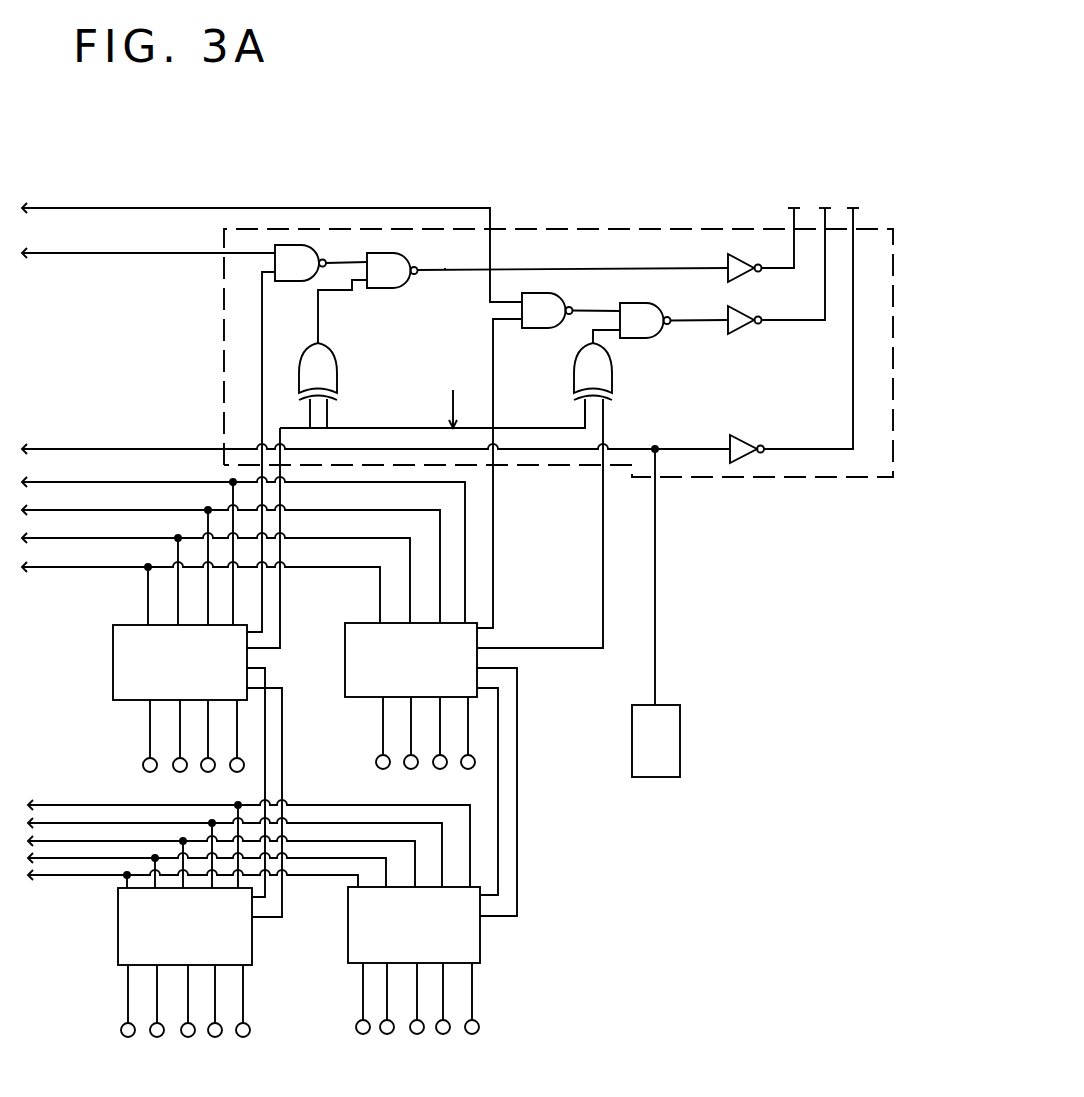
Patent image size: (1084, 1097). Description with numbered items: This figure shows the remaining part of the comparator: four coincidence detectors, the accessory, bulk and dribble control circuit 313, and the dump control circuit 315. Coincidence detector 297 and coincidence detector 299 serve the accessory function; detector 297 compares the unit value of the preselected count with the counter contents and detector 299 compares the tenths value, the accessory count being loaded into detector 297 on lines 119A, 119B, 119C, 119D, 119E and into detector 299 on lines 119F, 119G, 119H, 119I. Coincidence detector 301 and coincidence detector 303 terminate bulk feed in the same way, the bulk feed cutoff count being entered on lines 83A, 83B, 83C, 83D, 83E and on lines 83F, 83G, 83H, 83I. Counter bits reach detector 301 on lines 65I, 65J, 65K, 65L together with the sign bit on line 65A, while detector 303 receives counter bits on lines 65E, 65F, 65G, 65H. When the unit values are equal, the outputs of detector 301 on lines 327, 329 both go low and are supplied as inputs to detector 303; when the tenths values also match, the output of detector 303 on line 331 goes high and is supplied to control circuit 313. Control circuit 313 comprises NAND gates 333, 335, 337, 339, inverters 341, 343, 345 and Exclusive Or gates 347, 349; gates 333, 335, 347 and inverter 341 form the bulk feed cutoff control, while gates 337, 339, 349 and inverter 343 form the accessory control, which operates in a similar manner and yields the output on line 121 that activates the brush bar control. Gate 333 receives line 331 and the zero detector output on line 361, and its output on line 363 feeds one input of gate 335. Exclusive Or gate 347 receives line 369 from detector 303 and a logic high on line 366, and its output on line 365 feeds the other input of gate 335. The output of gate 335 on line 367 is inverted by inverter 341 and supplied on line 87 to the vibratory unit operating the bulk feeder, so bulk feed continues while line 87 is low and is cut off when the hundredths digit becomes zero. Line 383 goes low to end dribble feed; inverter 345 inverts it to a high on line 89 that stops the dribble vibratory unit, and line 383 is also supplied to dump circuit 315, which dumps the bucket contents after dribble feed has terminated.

The accessory, bulk and dribble control circuit 313 is at (222, 302).
The line 361 is at (358, 206).
The NAND gate 333 is at (310, 282).
The line 363 is at (346, 262).
The NAND gate 335 is at (418, 270).
The line 367 is at (452, 270).
The line 365 is at (320, 334).
The Exclusive Or gate 347 is at (338, 372).
The line 366 is at (364, 428).
The NAND gate 337 is at (560, 298).
The NAND gate 339 is at (651, 338).
The Exclusive Or gate 349 is at (612, 380).
The inverter 341 is at (736, 258).
The inverter 343 is at (752, 311).
The inverter 345 is at (746, 432).
The line 87 is at (788, 206).
The line 121 is at (823, 206).
The line 89 is at (858, 206).
The line 331 is at (262, 434).
The line 369 is at (284, 597).
The line 383 is at (111, 449).
The dump control circuit 315 is at (680, 749).
The line 65H is at (138, 484).
The line 65G is at (129, 512).
The line 65F is at (131, 540).
The line 65E is at (80, 568).
The coincidence detector 303 is at (128, 625).
The line 83F is at (145, 760).
The line 83G is at (175, 770).
The line 83H is at (208, 772).
The line 83I is at (237, 772).
The coincidence detector 299 is at (353, 623).
The line 119F is at (380, 755).
The line 119G is at (404, 768).
The line 119H is at (436, 768).
The line 119I is at (480, 777).
The line 327 is at (267, 727).
The line 329 is at (284, 756).
The line 65L is at (62, 805).
The line 65K is at (100, 823).
The line 65J is at (115, 841).
The line 65I is at (118, 862).
The line 65A is at (62, 878).
The coincidence detector 301 is at (118, 928).
The line 83A is at (124, 1024).
The line 83B is at (154, 1030).
The line 83C is at (184, 1034).
The line 83D is at (218, 1034).
The line 83E is at (249, 1027).
The coincidence detector 297 is at (348, 920).
The line 119A is at (358, 1033).
The line 119B is at (384, 1034).
The line 119C is at (412, 1033).
The line 119D is at (448, 1033).
The line 119E is at (476, 1021).